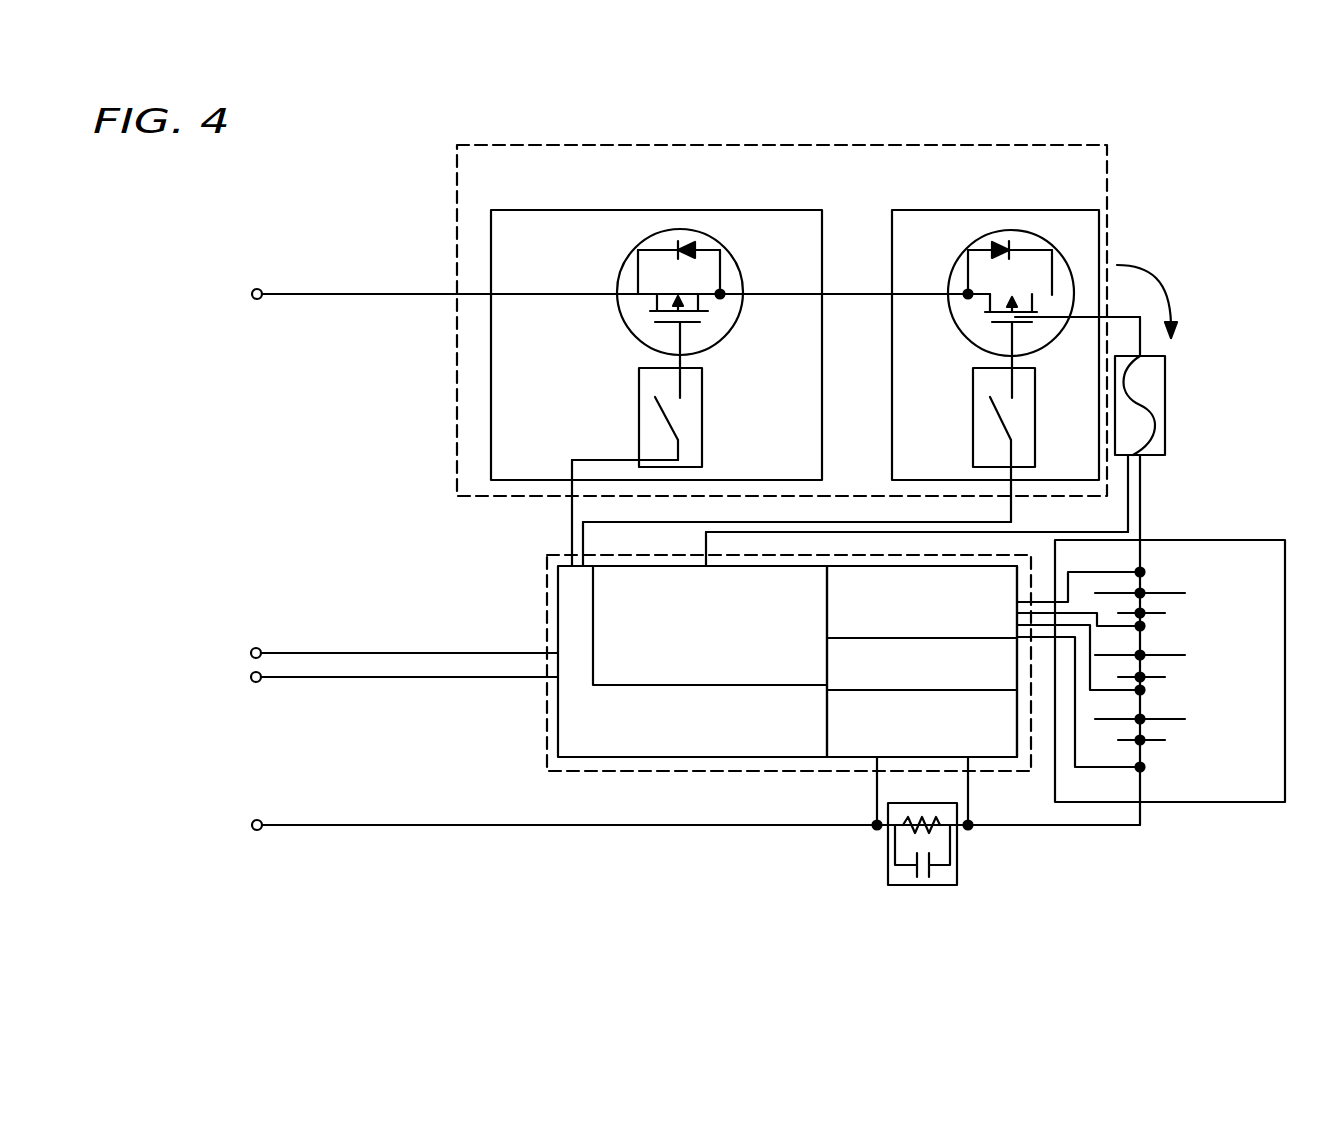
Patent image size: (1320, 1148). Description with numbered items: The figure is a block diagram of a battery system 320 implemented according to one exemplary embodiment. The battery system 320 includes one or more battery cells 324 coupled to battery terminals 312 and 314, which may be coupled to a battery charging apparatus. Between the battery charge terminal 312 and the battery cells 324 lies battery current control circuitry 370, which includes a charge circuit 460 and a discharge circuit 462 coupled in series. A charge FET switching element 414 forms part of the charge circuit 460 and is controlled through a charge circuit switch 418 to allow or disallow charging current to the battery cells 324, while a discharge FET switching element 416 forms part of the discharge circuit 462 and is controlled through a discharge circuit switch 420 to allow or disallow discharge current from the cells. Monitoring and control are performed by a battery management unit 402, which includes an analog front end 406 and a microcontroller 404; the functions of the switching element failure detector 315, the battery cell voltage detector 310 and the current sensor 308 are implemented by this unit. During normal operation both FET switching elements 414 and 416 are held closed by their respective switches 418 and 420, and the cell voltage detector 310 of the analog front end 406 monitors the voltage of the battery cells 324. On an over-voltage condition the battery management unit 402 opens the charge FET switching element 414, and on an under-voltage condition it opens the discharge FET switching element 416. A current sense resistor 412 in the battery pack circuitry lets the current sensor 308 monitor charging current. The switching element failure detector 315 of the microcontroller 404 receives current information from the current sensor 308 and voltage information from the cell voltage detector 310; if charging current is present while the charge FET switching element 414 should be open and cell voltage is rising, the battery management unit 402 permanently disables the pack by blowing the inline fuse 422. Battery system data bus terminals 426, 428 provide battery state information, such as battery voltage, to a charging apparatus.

The current sensor 308 is at (988, 751).
The battery cell voltage detector 310 is at (995, 628).
The battery charge terminal 312 is at (255, 303).
The battery terminal 314 is at (255, 834).
The switching element failure detector 315 is at (690, 681).
The battery system 320 is at (1155, 207).
The battery cells 324 is at (1222, 802).
The battery current control circuitry 370 is at (456, 198).
The battery management unit 402 is at (547, 633).
The microcontroller 404 is at (697, 757).
The analog front end 406 is at (853, 757).
The current sense resistor 412 is at (888, 849).
The charge FET switching element 414 is at (728, 252).
The discharge FET switching element 416 is at (968, 251).
The charge circuit switch 418 is at (639, 406).
The discharge circuit switch 420 is at (973, 406).
The inline fuse 422 is at (1165, 412).
The battery system data bus terminal 426 is at (253, 645).
The battery system data bus terminal 428 is at (255, 685).
The charge circuit 460 is at (695, 210).
The discharge circuit 462 is at (1003, 210).